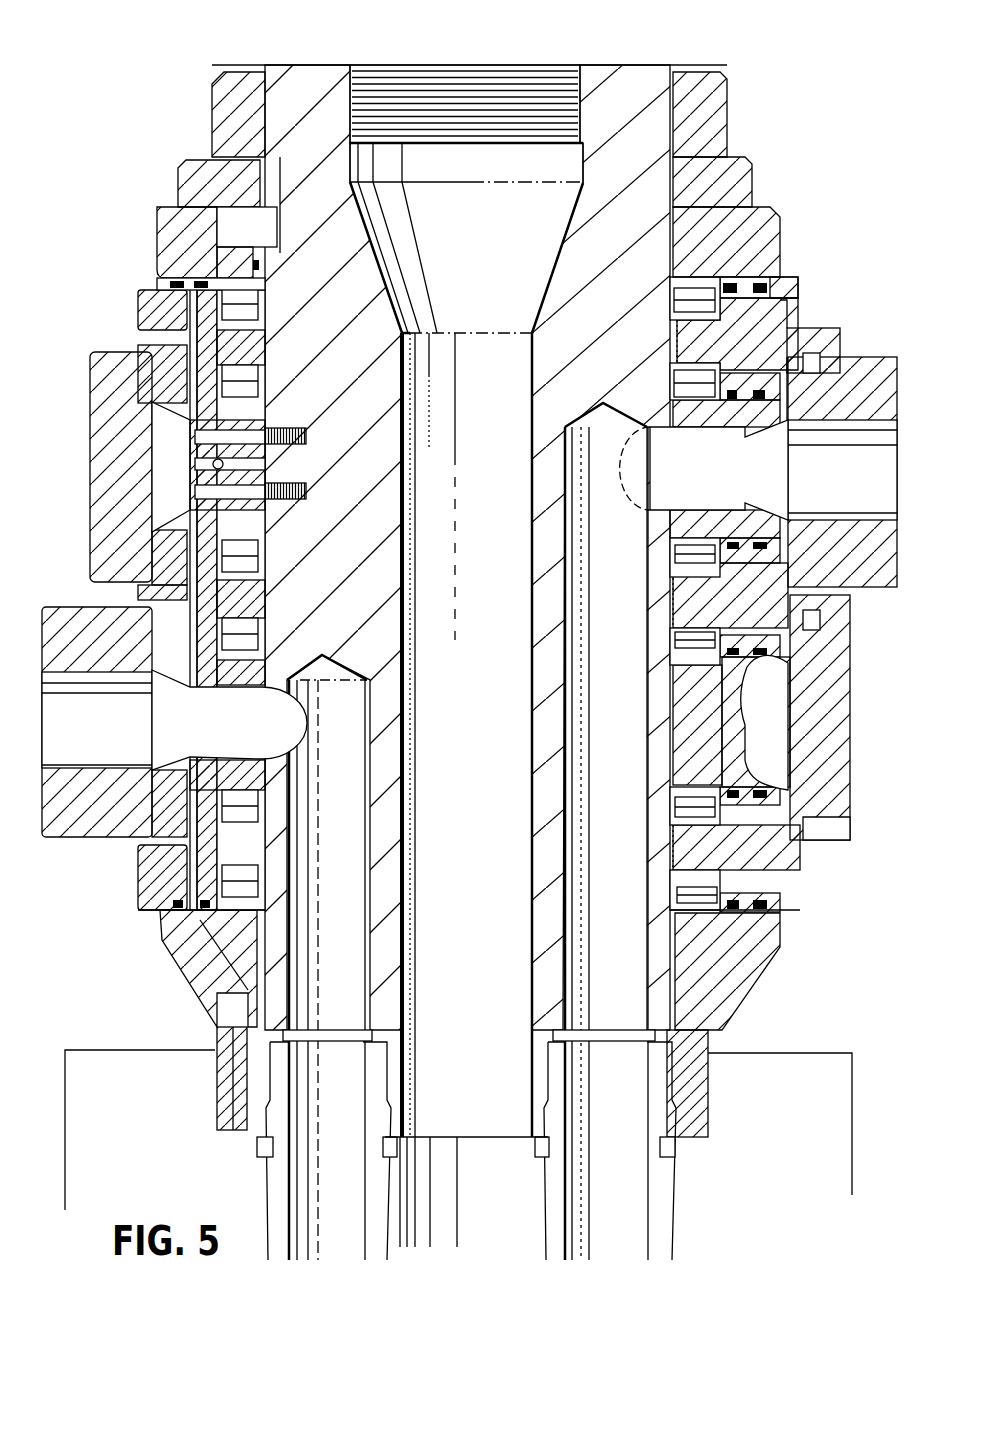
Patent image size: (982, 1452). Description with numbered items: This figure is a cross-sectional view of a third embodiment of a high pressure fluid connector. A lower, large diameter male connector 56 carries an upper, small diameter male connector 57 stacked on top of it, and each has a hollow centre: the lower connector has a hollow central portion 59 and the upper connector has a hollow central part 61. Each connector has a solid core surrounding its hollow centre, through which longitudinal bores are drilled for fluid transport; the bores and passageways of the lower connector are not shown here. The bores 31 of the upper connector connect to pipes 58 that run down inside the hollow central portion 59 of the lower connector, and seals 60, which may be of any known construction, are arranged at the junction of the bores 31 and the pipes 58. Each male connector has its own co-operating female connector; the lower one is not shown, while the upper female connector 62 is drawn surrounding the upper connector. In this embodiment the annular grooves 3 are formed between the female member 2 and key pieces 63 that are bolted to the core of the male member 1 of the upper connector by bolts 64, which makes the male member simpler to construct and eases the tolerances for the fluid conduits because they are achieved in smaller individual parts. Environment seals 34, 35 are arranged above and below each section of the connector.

The male member 1 is at (302, 96).
The female member 2 is at (166, 218).
The annular grooves 3 is at (178, 494).
The bores 31 is at (350, 870).
The environment seal 34 is at (175, 270).
The environment seal 35 is at (163, 248).
The lower male connector 56 is at (163, 1142).
The upper male connector 57 is at (469, 547).
The pipes 58 is at (366, 1225).
The hollow central portion 59 is at (518, 1234).
The seals 60 is at (398, 1150).
The hollow central part 61 is at (497, 672).
The upper female connector 62 is at (765, 238).
The key pieces 63 is at (140, 410).
The bolts 64 is at (165, 452).